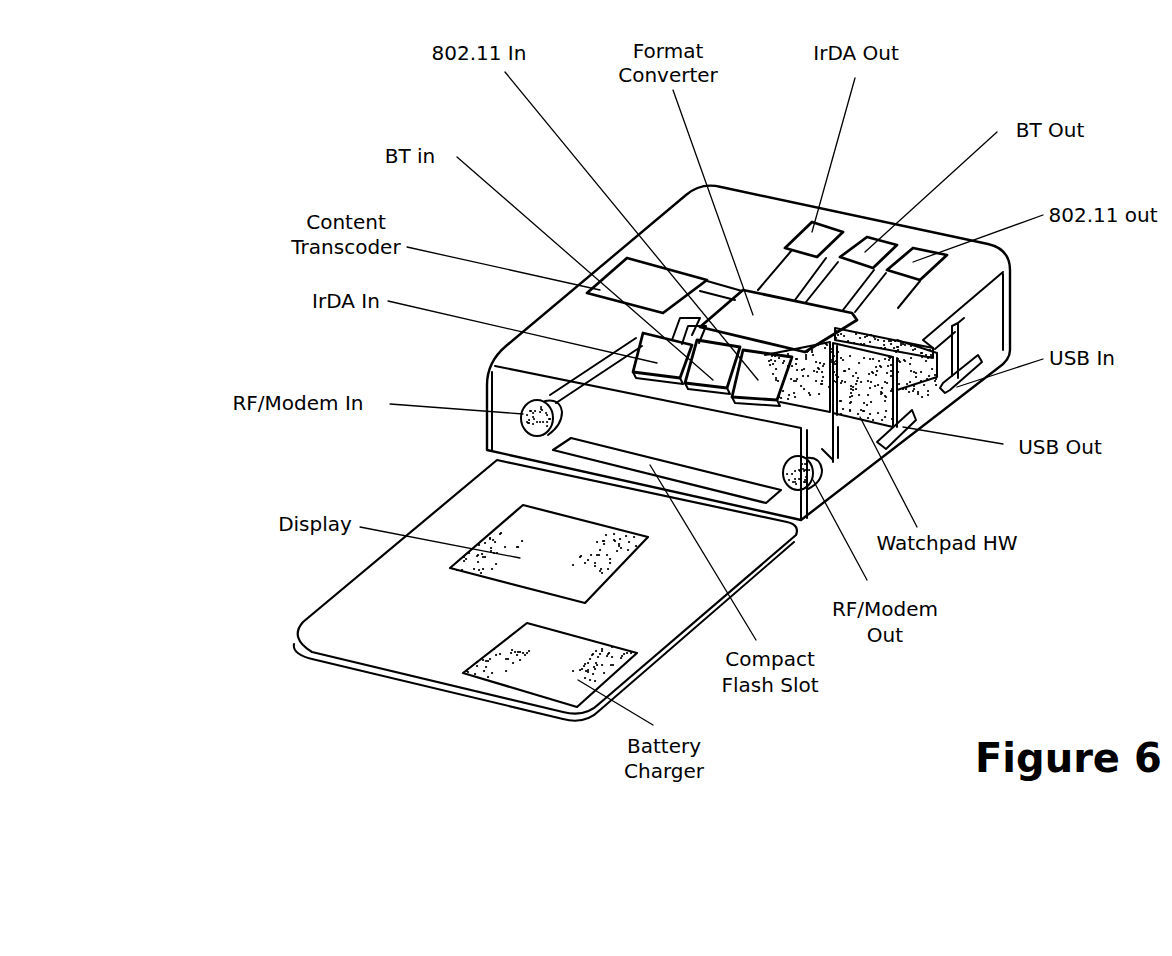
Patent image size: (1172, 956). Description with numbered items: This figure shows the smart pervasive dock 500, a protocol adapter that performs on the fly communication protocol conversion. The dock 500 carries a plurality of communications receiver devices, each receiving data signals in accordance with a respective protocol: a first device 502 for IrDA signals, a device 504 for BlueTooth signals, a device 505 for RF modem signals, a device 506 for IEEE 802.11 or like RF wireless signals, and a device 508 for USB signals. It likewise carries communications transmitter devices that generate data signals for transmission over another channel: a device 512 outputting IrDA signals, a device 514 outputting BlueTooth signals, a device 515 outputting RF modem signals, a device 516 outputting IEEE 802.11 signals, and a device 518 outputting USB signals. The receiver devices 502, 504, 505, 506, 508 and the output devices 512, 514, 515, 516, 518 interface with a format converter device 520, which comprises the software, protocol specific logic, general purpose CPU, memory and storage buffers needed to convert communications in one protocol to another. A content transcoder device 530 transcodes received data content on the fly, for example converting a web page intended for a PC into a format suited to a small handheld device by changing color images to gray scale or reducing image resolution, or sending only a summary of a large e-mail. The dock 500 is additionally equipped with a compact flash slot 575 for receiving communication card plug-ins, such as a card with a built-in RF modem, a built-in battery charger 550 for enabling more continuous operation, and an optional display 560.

The smart pervasive dock 500 is at (219, 81).
The first device for receiving IrDA signals 502 is at (657, 363).
The device for receiving BlueTooth signals 504 is at (692, 386).
The device for receiving RF modem signals 505 is at (497, 447).
The device for receiving IEEE 802.11 signals 506 is at (745, 395).
The device for receiving USB signals 508 is at (963, 390).
The device for outputting IrDA signals 512 is at (790, 217).
The device for outputting BlueTooth signals 514 is at (863, 232).
The device for outputting RF modem signals 515 is at (790, 477).
The device for outputting IEEE 802.11 signals 516 is at (922, 252).
The device for outputting USB signals 518 is at (906, 447).
The format converter device 520 is at (753, 312).
The content transcoder device 530 is at (620, 270).
The battery charger 550 is at (497, 660).
The display 560 is at (587, 573).
The compact flash slot 575 is at (627, 462).